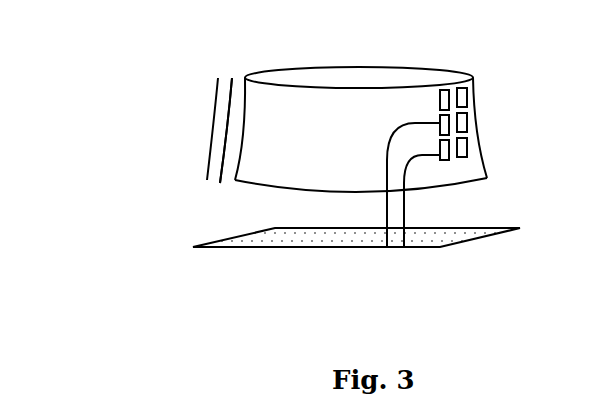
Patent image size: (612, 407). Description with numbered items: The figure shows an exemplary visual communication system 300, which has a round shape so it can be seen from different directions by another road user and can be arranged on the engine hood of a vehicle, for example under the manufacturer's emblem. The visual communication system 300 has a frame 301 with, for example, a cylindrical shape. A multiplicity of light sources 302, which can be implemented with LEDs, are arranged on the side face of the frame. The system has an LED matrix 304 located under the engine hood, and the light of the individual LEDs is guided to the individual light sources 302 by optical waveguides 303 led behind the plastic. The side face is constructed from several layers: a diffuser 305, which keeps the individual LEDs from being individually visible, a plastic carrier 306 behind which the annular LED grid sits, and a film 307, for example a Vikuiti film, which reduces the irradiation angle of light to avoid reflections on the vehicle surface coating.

The visual communication system 300 is at (138, 92).
The frame 301 is at (280, 67).
The light sources 302 is at (467, 95).
The optical waveguides 303 is at (404, 210).
The LED matrix 304 is at (487, 237).
The diffuser 305 is at (243, 137).
The plastic carrier 306 is at (220, 184).
The film 307 is at (217, 75).